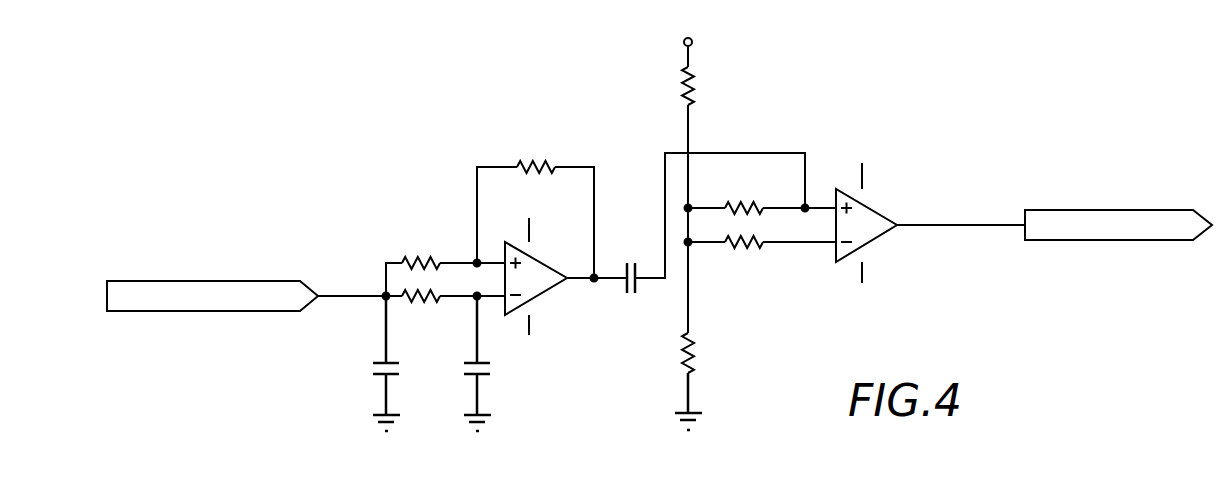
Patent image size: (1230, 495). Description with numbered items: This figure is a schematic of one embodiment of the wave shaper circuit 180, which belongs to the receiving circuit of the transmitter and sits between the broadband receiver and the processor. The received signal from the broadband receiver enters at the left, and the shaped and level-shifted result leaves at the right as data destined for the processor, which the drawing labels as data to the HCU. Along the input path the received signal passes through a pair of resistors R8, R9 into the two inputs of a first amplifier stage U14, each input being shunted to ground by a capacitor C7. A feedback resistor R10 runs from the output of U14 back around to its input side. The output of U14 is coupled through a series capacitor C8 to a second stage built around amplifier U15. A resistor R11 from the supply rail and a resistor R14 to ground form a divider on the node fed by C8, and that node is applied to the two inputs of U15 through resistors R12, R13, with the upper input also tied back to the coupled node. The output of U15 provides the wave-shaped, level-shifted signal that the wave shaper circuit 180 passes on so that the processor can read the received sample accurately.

The wave shaper circuit 180 is at (1012, 98).
The resistor R8 is at (418, 249).
The resistor R9 is at (418, 311).
The feedback resistor R10 is at (536, 151).
The pull-up resistor R11 is at (713, 86).
The resistor R12 is at (742, 193).
The resistor R13 is at (742, 254).
The resistor R14 is at (716, 353).
The capacitor C7 is at (446, 363).
The coupling capacitor C8 is at (637, 264).
The operational amplifier U14 is at (532, 275).
The comparator U15 is at (864, 222).